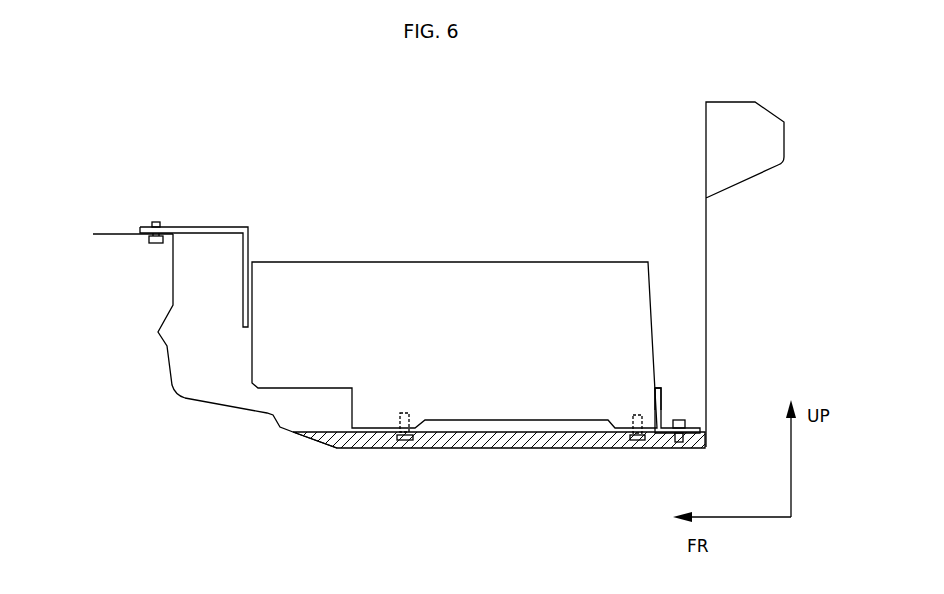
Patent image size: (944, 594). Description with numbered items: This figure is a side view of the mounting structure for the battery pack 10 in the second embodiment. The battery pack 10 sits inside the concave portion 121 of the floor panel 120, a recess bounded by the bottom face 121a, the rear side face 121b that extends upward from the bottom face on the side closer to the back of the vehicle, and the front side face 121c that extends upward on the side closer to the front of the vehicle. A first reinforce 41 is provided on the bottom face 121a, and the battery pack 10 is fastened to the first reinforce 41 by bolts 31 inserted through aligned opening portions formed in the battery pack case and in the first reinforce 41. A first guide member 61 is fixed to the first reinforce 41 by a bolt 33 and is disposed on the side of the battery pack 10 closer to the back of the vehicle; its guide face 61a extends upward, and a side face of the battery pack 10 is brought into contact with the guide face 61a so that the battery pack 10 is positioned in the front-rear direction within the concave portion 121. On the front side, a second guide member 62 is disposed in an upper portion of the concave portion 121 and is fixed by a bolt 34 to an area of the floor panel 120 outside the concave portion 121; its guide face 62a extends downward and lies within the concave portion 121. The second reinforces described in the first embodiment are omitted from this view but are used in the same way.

The battery pack 10 is at (245, 344).
The bolt 31 is at (404, 446).
The bolt 33 is at (685, 419).
The bolt 34 is at (153, 243).
The first reinforce 41 is at (573, 443).
The first guide member 61 is at (661, 398).
The guide face 61a is at (671, 404).
The second guide member 62 is at (221, 219).
The guide face 62a is at (247, 293).
The floor panel 120 is at (98, 227).
The concave portion 121 is at (257, 421).
The bottom face 121a is at (500, 449).
The side face 121b is at (707, 295).
The side face 121c is at (167, 312).